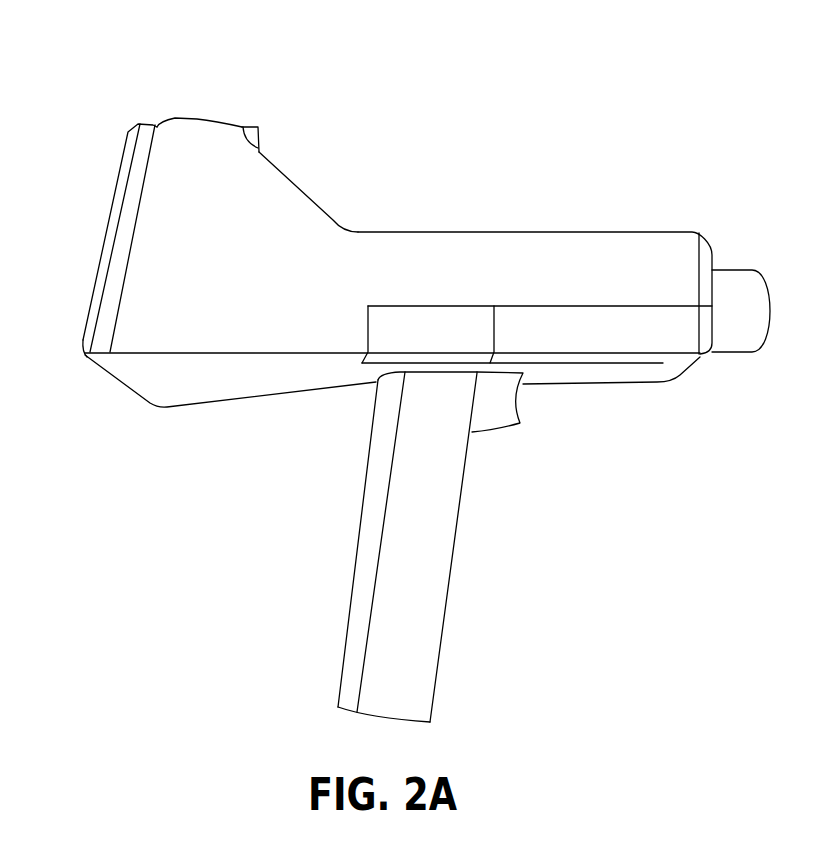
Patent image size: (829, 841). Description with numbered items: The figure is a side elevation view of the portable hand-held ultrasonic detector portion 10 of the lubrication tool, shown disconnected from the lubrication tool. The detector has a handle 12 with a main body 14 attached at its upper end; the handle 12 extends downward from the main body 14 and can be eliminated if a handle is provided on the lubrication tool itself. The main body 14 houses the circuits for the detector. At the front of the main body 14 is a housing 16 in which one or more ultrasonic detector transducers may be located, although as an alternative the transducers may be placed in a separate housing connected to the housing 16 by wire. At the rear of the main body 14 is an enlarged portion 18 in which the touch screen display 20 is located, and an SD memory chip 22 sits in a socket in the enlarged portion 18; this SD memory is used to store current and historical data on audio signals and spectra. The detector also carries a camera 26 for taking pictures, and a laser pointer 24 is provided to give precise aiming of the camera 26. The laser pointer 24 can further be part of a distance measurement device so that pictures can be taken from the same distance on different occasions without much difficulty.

The portable hand-held ultrasonic detector portion 10 is at (472, 103).
The handle 12 is at (460, 517).
The main body 14 is at (493, 232).
The housing 16 is at (742, 268).
The enlarged portion 18 is at (158, 125).
The touch screen display 20 is at (110, 213).
The SD memory chip 22 is at (120, 178).
The laser pointer 24 is at (308, 198).
The camera 26 is at (262, 135).